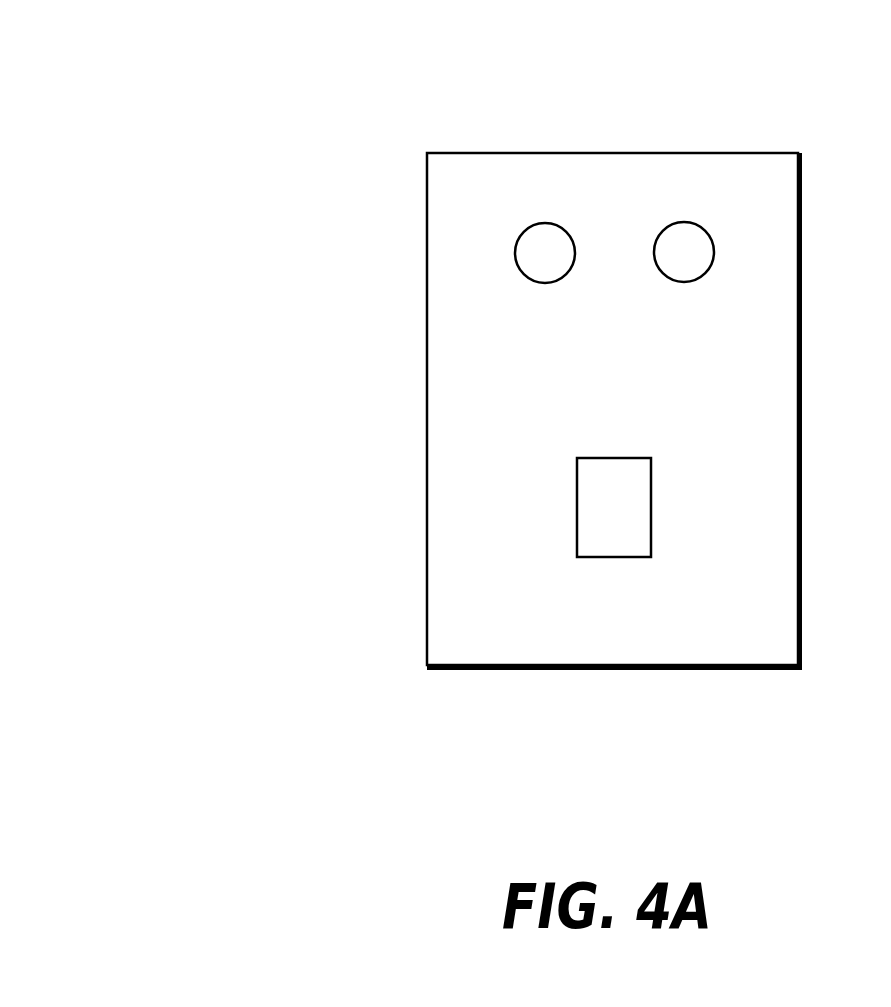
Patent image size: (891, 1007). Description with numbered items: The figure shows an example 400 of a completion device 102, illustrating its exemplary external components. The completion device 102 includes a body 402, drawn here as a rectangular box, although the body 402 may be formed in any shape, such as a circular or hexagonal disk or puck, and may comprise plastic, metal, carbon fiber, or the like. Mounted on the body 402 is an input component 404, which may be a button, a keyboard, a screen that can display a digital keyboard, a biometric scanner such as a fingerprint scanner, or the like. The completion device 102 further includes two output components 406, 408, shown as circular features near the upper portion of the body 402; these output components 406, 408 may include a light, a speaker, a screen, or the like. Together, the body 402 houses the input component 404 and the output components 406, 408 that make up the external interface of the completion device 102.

The example of a completion device 400 is at (155, 99).
The body 402 is at (747, 321).
The input component 404 is at (651, 500).
The output component 406 is at (545, 223).
The output component 408 is at (685, 222).
The completion device 102 is at (640, 753).